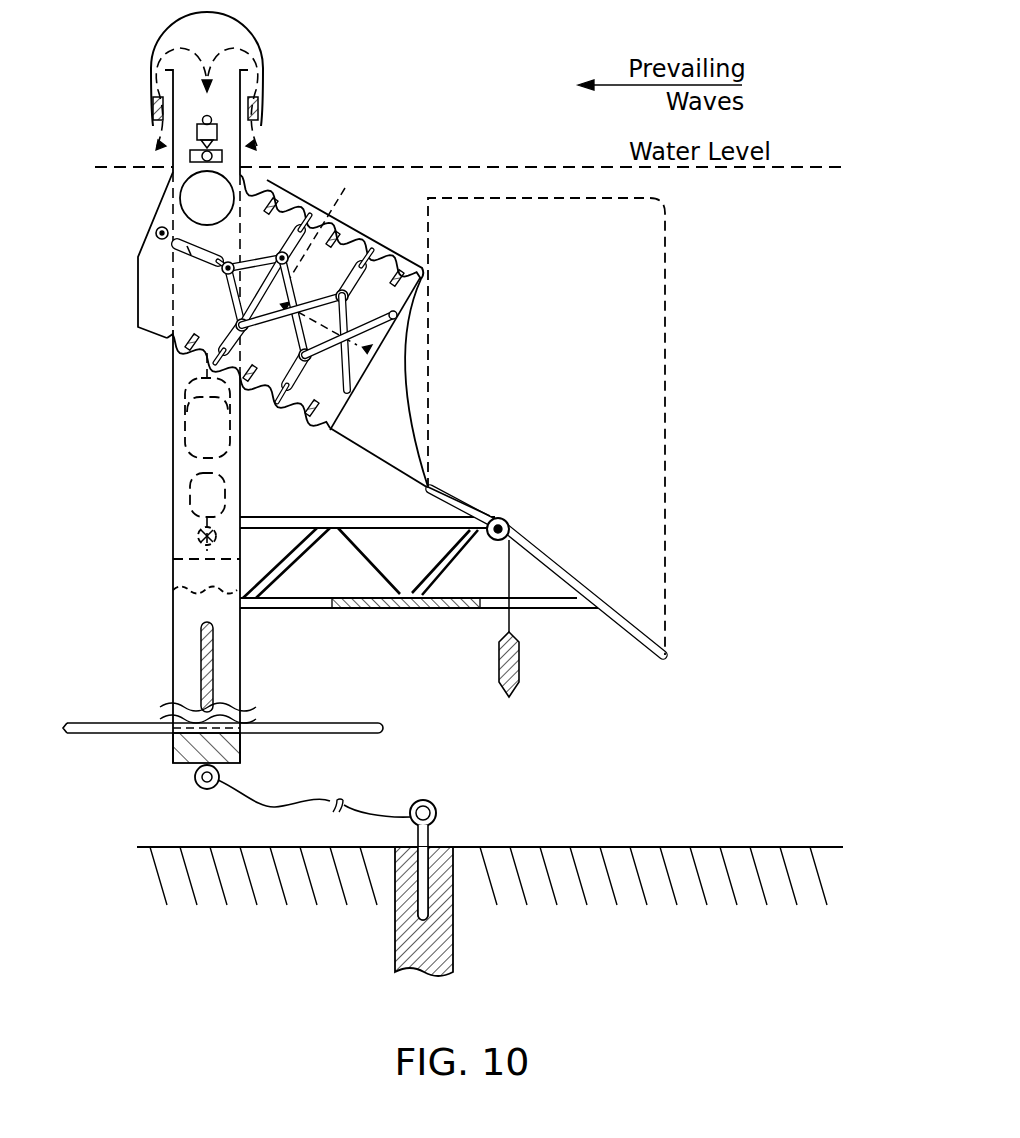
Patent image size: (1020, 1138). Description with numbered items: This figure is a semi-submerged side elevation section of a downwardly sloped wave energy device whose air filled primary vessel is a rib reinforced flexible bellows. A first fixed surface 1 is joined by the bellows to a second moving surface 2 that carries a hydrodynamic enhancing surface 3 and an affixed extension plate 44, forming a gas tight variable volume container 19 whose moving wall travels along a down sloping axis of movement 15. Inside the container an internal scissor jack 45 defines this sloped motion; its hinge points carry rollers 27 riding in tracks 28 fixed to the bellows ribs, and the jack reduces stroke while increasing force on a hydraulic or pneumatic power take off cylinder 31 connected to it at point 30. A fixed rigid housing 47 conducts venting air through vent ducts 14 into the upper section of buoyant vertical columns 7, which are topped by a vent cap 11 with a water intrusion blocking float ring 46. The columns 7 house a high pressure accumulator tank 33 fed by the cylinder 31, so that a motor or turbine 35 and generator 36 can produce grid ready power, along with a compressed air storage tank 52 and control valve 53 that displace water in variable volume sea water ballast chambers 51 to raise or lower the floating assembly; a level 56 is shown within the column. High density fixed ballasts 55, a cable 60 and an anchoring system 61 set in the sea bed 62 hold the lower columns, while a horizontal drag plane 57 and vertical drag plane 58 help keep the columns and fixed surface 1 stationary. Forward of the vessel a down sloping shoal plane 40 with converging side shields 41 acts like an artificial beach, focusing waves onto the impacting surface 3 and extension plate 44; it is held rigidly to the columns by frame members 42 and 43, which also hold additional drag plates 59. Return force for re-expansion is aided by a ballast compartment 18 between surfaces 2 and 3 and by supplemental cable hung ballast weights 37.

The first fixed surface 1 is at (168, 325).
The second moving surface 2 is at (388, 337).
The hydrodynamic enhancing surface 3 is at (410, 412).
The buoyant vertical columns 7 is at (173, 446).
The vent cap 11 is at (238, 30).
The vent ducts 14 is at (196, 209).
The down sloping axis of movement 15 is at (357, 347).
The compartment 18 is at (370, 445).
The gas tight variable volume container 19 is at (300, 409).
The rollers 27 is at (300, 357).
The tracks 28 is at (298, 250).
The connection point 30 is at (222, 277).
The hydraulic or pneumatic power take off cylinder 31 is at (190, 258).
The high pressure hydraulic or pneumatic accumulator tank 33 is at (197, 417).
The hydraulic or pneumatic motor or turbine 35 is at (190, 156).
The generator 36 is at (217, 133).
The cable hung ballast weights 37 is at (522, 661).
The shoal plane 40 is at (600, 595).
The converging side shields 41 is at (663, 472).
The frame member 42 is at (432, 529).
The frame member 43 is at (250, 609).
The extension plate 44 is at (445, 481).
The internal scissor jack 45 is at (352, 303).
The water intrusion blocking float ring 46 is at (262, 110).
The fixed rigid housing 47 is at (155, 237).
The variable volume sea water ballast chambers 51 is at (188, 575).
The compressed air storage tank 52 is at (195, 494).
The control valve 53 is at (197, 538).
The high density fixed ballasts 55 is at (180, 751).
The water line 56 is at (188, 617).
The horizontal drag plane 57 is at (337, 722).
The vertical drag plane 58 is at (201, 666).
The drag plates 59 is at (437, 609).
The cable 60 is at (298, 800).
The anchoring system 61 is at (438, 814).
The sea bed 62 is at (610, 846).